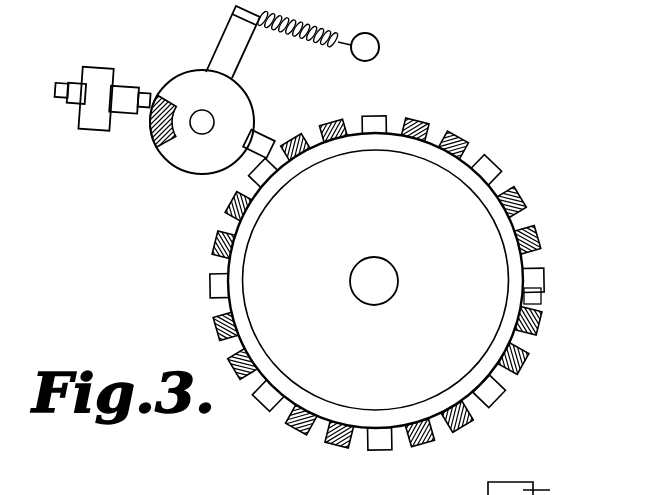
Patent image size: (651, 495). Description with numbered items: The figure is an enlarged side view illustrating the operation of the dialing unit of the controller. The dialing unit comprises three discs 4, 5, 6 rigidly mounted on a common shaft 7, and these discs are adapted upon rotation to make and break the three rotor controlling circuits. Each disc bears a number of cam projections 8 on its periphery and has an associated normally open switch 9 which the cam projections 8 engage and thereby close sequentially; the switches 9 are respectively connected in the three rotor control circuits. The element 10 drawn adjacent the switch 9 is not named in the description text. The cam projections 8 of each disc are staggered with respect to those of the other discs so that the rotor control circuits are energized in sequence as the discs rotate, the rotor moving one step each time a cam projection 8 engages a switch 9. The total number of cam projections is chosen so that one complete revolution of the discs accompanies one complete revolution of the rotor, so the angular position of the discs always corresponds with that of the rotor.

The disc 4 is at (541, 296).
The disc 5 is at (528, 335).
The disc 6 is at (513, 372).
The common shaft 7 is at (385, 292).
The cam projections 8 is at (512, 187).
The switch 9 is at (197, 163).
The pawl 10 is at (262, 142).